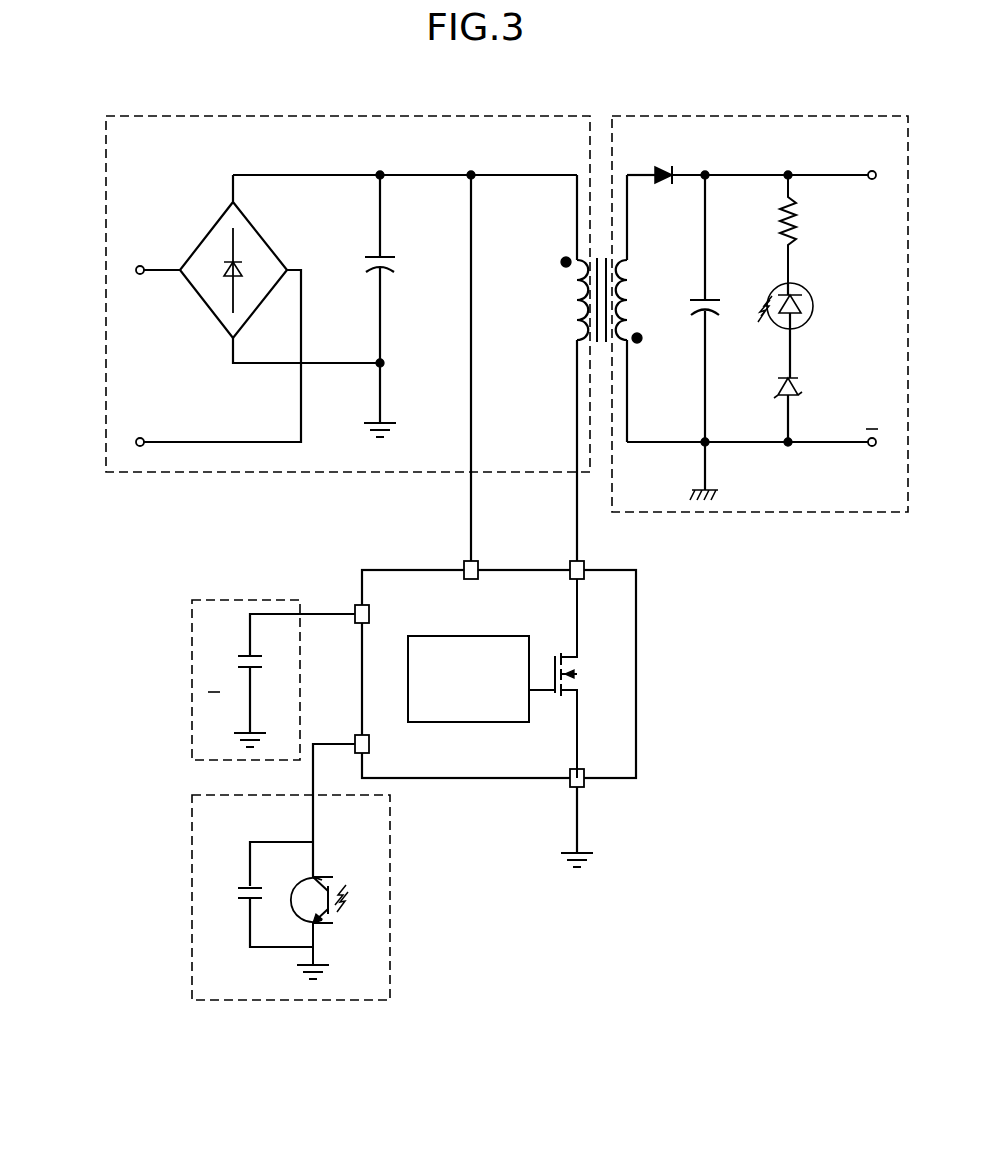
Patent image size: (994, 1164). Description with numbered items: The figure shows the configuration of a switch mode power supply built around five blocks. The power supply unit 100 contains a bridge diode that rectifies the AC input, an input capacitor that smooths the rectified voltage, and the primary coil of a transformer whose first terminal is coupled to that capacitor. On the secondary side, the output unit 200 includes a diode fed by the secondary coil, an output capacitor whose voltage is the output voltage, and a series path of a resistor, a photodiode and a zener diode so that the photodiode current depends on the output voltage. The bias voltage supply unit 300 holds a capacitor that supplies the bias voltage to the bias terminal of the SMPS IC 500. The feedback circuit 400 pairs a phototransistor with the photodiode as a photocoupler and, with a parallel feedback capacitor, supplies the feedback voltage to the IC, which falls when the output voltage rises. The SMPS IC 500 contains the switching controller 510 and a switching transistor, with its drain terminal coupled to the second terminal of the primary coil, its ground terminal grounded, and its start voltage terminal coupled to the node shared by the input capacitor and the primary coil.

The power supply unit 100 is at (106, 200).
The output unit 200 is at (806, 513).
The bias voltage supply unit 300 is at (233, 600).
The feedback circuit 400 is at (390, 955).
The SMPS IC 500 is at (386, 569).
The switching controller 510 is at (485, 722).